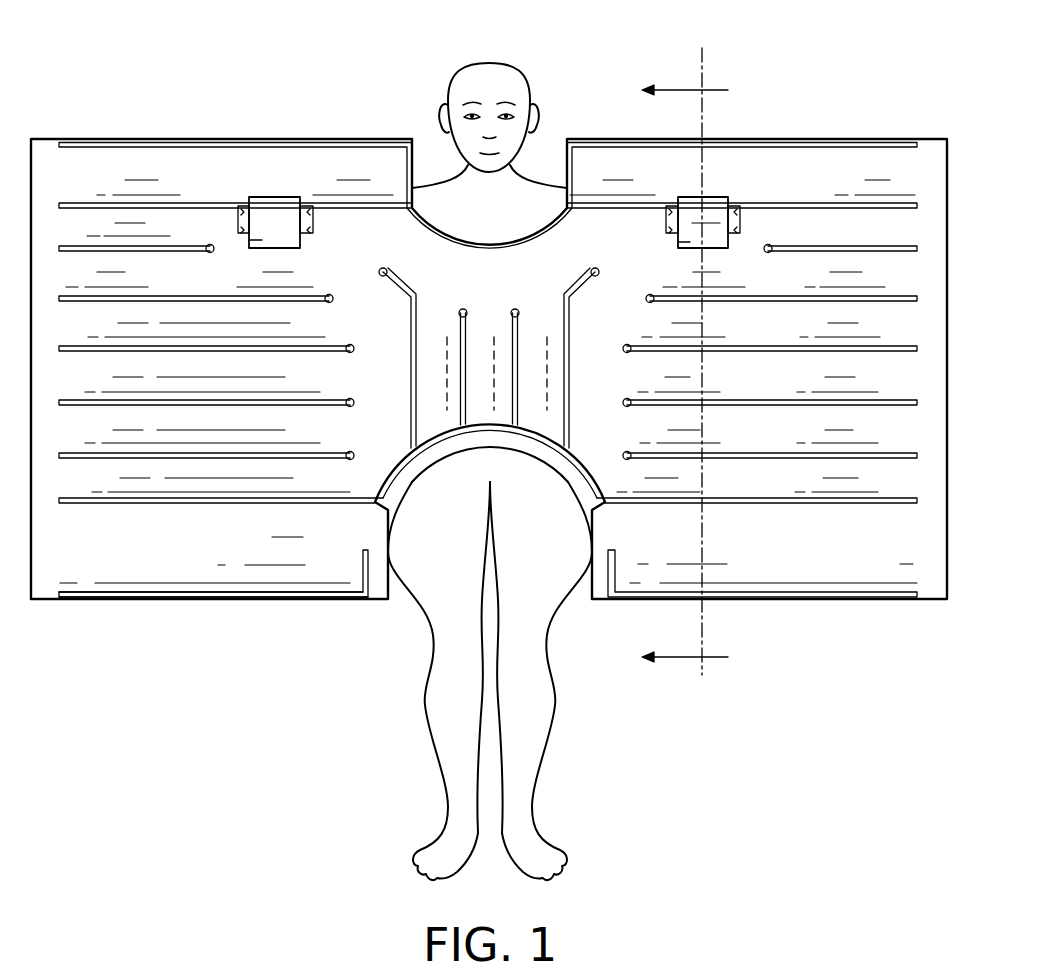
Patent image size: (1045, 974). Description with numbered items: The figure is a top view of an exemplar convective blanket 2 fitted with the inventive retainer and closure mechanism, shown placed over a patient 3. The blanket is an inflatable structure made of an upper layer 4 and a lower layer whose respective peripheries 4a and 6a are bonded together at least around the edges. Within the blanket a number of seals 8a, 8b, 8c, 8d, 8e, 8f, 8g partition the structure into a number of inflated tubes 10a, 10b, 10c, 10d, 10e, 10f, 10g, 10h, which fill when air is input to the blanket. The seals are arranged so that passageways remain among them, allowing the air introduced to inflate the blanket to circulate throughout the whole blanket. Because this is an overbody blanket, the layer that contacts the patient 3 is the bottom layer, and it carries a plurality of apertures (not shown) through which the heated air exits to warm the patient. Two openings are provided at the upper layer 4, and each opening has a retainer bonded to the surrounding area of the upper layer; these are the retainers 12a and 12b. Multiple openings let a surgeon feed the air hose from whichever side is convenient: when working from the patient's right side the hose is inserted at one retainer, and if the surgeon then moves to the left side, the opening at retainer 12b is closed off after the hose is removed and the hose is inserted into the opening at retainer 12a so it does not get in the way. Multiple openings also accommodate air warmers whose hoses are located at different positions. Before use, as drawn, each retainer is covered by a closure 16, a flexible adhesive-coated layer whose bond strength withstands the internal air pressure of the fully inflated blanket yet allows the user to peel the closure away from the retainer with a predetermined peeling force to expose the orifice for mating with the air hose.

The convective blanket 2 is at (789, 80).
The patient 3 is at (456, 63).
The upper layer 4 is at (90, 276).
The periphery of upper layer 4a is at (128, 576).
The periphery of lower layer 6a is at (207, 600).
The seal 8a is at (778, 506).
The seal 8b is at (869, 459).
The seal 8c is at (878, 406).
The seal 8d is at (875, 352).
The seal 8e is at (873, 302).
The seal 8f is at (872, 252).
The seal 8g is at (887, 204).
The inflated tube 10a is at (866, 562).
The inflated tube 10b is at (778, 495).
The inflated tube 10c is at (782, 442).
The inflated tube 10d is at (785, 390).
The inflated tube 10e is at (782, 335).
The inflated tube 10f is at (792, 285).
The inflated tube 10g is at (852, 238).
The inflated tube 10h is at (815, 188).
The retainer 12a is at (264, 197).
The retainer 12b is at (678, 197).
The closure 16 is at (259, 243).